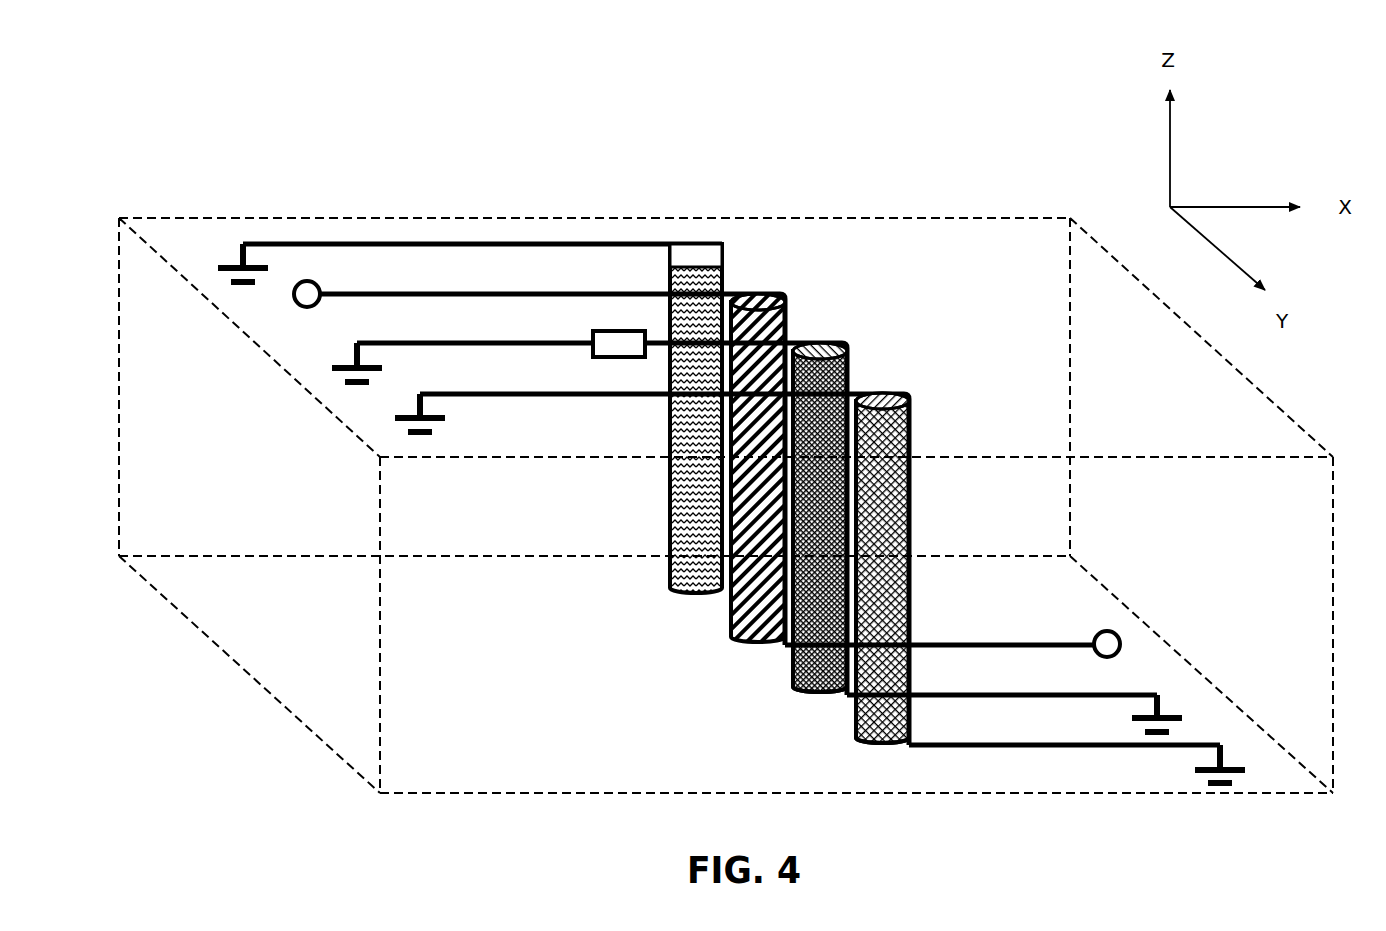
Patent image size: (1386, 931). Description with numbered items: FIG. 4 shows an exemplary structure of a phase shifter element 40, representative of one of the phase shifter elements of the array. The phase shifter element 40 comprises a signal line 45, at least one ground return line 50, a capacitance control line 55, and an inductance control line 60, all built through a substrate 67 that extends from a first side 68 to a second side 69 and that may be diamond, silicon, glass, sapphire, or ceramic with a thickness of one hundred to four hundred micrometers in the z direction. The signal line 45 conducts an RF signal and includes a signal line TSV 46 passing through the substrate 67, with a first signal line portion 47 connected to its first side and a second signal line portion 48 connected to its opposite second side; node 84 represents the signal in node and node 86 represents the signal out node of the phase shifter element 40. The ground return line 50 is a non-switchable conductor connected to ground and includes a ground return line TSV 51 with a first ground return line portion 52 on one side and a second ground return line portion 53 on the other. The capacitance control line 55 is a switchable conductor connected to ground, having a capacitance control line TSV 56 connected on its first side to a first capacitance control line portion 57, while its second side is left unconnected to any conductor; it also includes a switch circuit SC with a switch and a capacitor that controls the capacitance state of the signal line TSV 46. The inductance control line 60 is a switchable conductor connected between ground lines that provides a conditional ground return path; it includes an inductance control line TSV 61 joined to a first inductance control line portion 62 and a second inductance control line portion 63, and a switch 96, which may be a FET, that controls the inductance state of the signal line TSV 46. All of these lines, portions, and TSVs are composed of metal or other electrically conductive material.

The phase shifter element 40 is at (370, 93).
The substrate 67 is at (270, 218).
The first side 68 is at (199, 240).
The second side 69 is at (488, 795).
The first capacitance control line portion 57 is at (328, 242).
The first signal line portion 47 is at (370, 293).
The first inductance control line portion 62 is at (420, 340).
The first ground return line portion 52 is at (468, 392).
The signal in node 84 is at (307, 307).
The signal out node 86 is at (1107, 631).
The switch 96 is at (619, 344).
The capacitance control line 55 is at (747, 254).
The capacitance control line TSV 56 is at (678, 570).
The signal line 45 is at (805, 302).
The signal line TSV 46 is at (742, 622).
The inductance control line 60 is at (865, 353).
The inductance control line TSV 61 is at (803, 675).
The ground return line 50 is at (928, 403).
The ground return line TSV 51 is at (868, 720).
The second signal line portion 48 is at (1007, 647).
The second inductance control line portion 63 is at (1044, 697).
The second ground return line portion 53 is at (1092, 747).